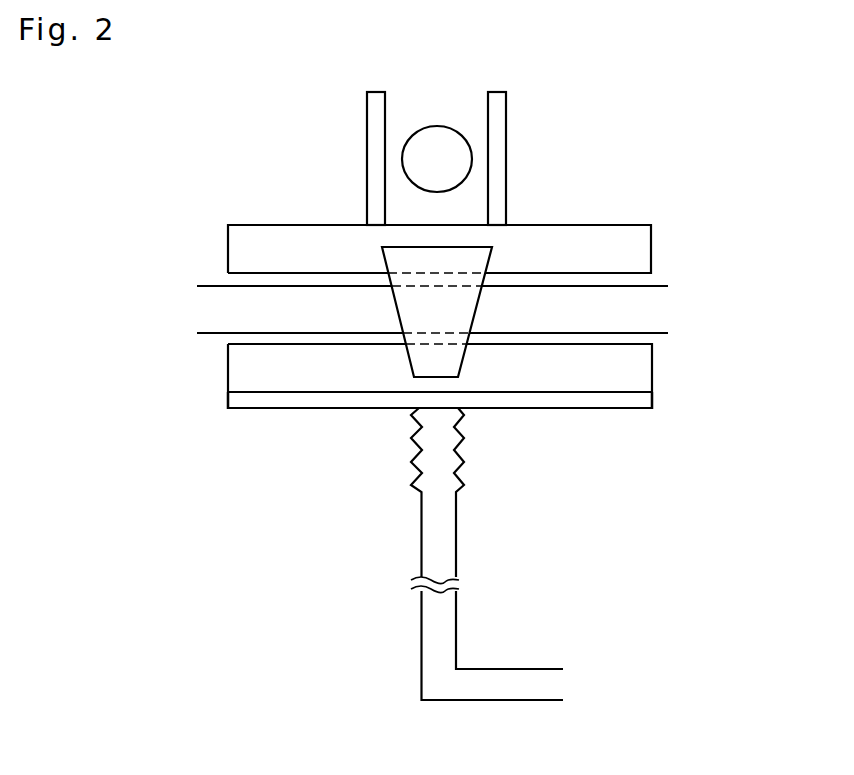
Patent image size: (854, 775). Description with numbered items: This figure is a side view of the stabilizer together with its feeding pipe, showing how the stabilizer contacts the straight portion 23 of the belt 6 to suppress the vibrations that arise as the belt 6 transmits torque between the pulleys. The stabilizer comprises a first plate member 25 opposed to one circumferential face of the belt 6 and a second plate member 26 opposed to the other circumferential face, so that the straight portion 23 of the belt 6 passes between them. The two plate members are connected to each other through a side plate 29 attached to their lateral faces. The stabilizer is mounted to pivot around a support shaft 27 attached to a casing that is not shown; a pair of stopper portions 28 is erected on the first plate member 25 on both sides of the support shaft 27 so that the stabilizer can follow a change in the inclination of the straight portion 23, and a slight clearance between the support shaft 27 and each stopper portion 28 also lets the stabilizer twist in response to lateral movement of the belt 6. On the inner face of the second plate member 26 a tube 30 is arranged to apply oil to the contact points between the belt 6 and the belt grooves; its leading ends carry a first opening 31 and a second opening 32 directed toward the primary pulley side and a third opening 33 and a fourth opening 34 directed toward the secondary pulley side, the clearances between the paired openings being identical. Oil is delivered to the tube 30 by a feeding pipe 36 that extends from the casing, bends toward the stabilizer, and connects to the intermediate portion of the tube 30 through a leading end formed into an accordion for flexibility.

The belt 6 is at (657, 308).
The straight portion 23 is at (657, 308).
The first plate member 25 is at (645, 250).
The second plate member 26 is at (645, 367).
The support shaft 27 is at (445, 166).
The stopper portions 28 is at (373, 157).
The side plate 29 is at (467, 310).
The tube 30 is at (312, 401).
The first opening 31 is at (228, 401).
The second opening 32 is at (228, 401).
The third opening 33 is at (655, 398).
The fourth opening 34 is at (655, 398).
The feeding pipe 36 is at (458, 620).